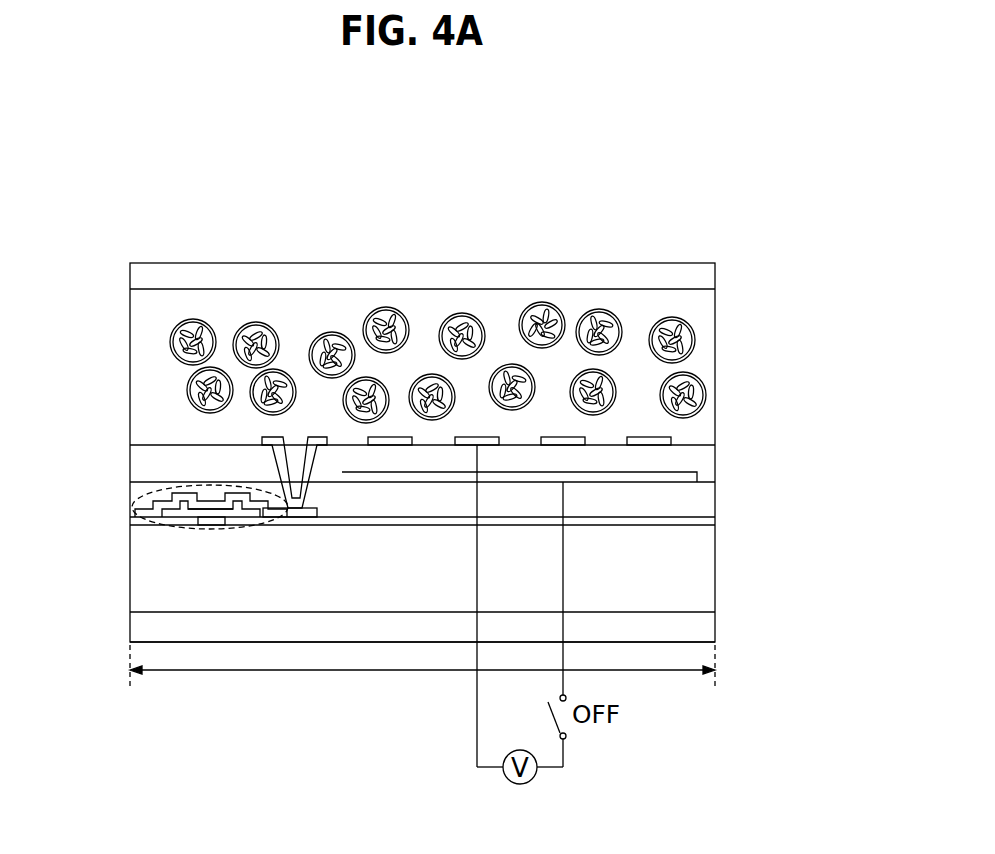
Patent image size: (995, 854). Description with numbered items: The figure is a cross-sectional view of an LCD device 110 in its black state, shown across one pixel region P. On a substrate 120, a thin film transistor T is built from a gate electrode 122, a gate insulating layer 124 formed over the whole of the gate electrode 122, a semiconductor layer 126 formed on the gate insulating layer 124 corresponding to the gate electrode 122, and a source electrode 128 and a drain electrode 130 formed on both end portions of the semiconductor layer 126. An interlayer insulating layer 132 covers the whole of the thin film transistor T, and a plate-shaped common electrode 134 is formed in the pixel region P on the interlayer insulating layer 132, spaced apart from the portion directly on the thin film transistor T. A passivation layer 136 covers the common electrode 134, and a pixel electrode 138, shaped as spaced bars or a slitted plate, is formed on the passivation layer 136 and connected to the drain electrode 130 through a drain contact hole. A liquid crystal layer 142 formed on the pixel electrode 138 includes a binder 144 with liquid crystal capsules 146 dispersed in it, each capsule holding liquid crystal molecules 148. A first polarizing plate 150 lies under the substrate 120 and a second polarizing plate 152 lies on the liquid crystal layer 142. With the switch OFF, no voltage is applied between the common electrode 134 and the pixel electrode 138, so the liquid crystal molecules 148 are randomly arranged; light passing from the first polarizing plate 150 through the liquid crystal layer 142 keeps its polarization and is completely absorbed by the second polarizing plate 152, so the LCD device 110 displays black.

The LCD device 110 is at (470, 147).
The substrate 120 is at (708, 607).
The gate electrode 122 is at (212, 524).
The gate insulating layer 124 is at (240, 512).
The semiconductor layer 126 is at (250, 512).
The source electrode 128 is at (143, 522).
The drain electrode 130 is at (308, 514).
The interlayer insulating layer 132 is at (492, 500).
The common electrode 134 is at (607, 477).
The passivation layer 136 is at (662, 460).
The pixel electrode 138 is at (307, 468).
The liquid crystal layer 142 is at (725, 290).
The binder 144 is at (424, 312).
The liquid crystal capsule 146 is at (547, 312).
The liquid crystal molecules 148 is at (540, 306).
The first polarizing plate 150 is at (140, 626).
The second polarizing plate 152 is at (270, 282).
The thin film transistor T is at (145, 494).
The pixel region P is at (422, 672).